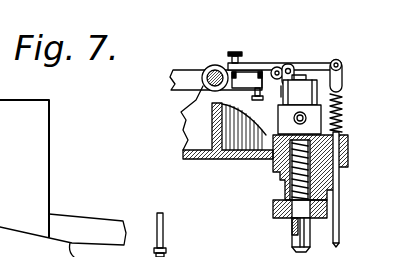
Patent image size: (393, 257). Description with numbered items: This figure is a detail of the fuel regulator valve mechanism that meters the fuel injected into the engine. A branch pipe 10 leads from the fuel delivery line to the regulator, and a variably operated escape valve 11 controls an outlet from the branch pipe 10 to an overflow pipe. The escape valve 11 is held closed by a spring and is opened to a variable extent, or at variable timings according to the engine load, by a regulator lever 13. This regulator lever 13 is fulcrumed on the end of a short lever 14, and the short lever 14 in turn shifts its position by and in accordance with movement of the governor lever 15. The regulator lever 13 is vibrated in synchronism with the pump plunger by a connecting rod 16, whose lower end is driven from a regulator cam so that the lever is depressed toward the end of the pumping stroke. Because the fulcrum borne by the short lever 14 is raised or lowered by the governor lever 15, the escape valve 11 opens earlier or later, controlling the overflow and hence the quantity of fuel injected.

The branch pipe 10 is at (292, 241).
The escape valve 11 is at (300, 74).
The regulator lever 13 is at (294, 63).
The short lever 14 is at (253, 63).
The governor lever 15 is at (174, 75).
The connecting rod 16 is at (340, 194).